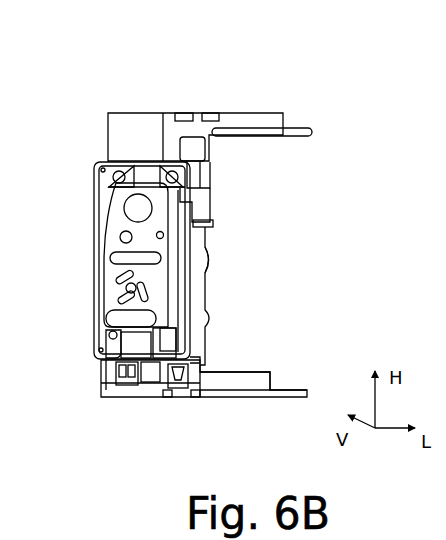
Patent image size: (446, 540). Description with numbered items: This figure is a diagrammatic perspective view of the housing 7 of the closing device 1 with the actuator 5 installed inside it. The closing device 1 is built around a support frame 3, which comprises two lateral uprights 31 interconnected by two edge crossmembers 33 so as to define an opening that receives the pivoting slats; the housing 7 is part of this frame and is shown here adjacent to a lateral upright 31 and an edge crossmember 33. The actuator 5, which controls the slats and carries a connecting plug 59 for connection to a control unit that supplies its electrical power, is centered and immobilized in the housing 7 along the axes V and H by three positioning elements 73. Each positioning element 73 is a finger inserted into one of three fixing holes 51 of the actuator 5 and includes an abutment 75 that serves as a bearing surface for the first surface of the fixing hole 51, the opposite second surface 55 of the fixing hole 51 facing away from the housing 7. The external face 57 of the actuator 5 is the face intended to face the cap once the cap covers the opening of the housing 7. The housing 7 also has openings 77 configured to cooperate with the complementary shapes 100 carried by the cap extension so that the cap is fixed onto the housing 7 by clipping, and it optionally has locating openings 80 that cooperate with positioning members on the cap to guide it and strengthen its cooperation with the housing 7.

The closing device 1 is at (336, 146).
The support frame 3 is at (268, 110).
The actuator 5 is at (102, 250).
The housing 7 is at (91, 208).
The lateral upright 31 is at (212, 318).
The edge crossmember 33 is at (232, 113).
The fixing hole 51 is at (124, 170).
The second surface 55 is at (106, 342).
The external face 57 is at (152, 284).
The connecting plug 59 is at (113, 388).
The positioning element 73 is at (99, 180).
The abutment 75 is at (198, 176).
The opening 77 is at (210, 113).
The locating opening 80 is at (100, 172).
The complementary shape 100 is at (21, 509).